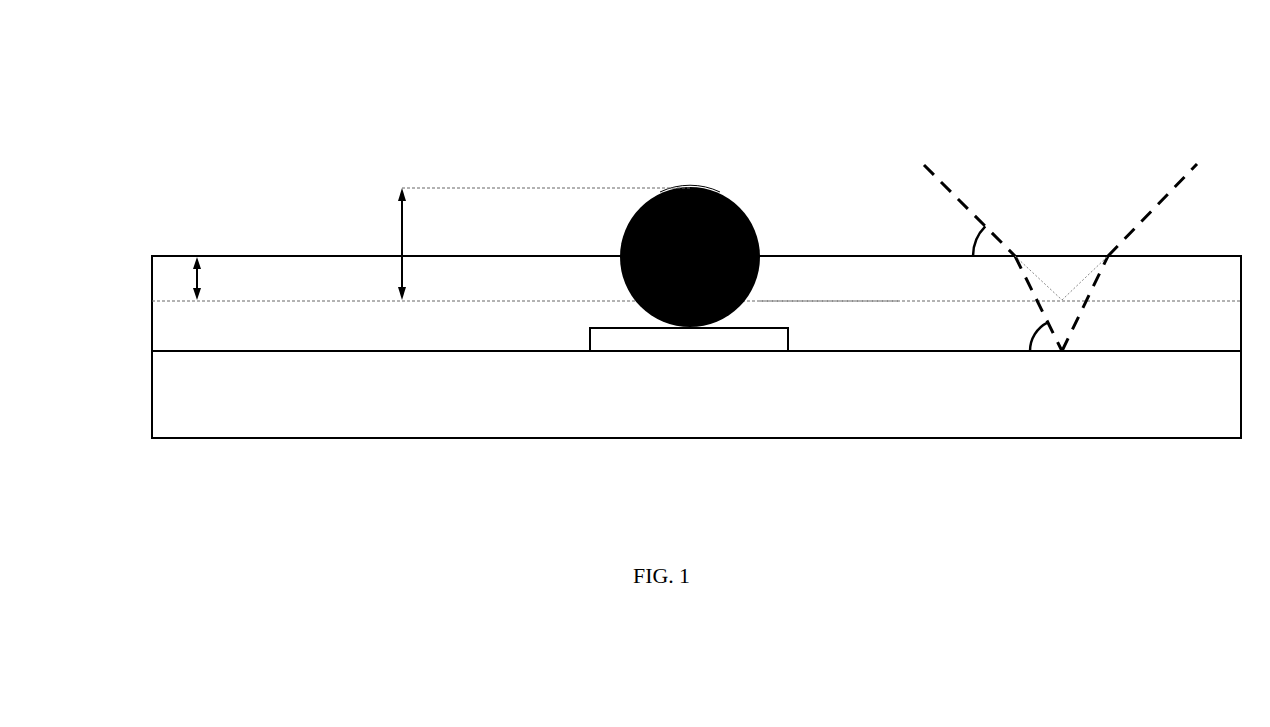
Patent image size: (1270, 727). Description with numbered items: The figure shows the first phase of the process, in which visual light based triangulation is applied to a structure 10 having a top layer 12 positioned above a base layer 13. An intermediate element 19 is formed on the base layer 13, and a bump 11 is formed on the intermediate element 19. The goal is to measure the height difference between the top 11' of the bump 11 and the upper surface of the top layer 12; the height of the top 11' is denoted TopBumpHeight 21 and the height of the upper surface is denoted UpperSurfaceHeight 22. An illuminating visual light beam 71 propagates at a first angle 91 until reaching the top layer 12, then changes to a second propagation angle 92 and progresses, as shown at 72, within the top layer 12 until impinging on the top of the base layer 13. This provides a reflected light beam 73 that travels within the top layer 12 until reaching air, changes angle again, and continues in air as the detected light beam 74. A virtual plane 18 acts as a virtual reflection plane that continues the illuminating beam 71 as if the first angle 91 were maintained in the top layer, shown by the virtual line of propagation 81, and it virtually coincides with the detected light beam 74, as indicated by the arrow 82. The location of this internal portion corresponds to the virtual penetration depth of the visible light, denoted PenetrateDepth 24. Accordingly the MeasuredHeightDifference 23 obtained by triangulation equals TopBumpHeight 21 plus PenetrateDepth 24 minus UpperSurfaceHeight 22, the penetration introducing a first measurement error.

The semiconductor structure 10 is at (665, 477).
The bump 11 is at (690, 257).
The top of the bump 11' is at (755, 111).
The top layer 12 is at (556, 341).
The base layer 13 is at (350, 404).
The virtual plane 18 is at (836, 300).
The intermediate element 19 is at (689, 340).
The TopBumpHeight 21 is at (587, 118).
The UpperSurfaceHeight 22 is at (185, 256).
The MeasuredHeightDifference 23 is at (400, 220).
The PenetrateDepth 24 is at (200, 287).
The illuminating visual light beam 71 is at (947, 183).
The progress of the light beam within the top layer 72 is at (1025, 281).
The reflected light beam 73 is at (1100, 274).
The detected light beam 74 is at (1160, 200).
The virtual line of propagation 81 is at (1035, 257).
The arrow 82 is at (1080, 282).
The first angle 91 is at (975, 248).
The second propagation angle 92 is at (1032, 334).